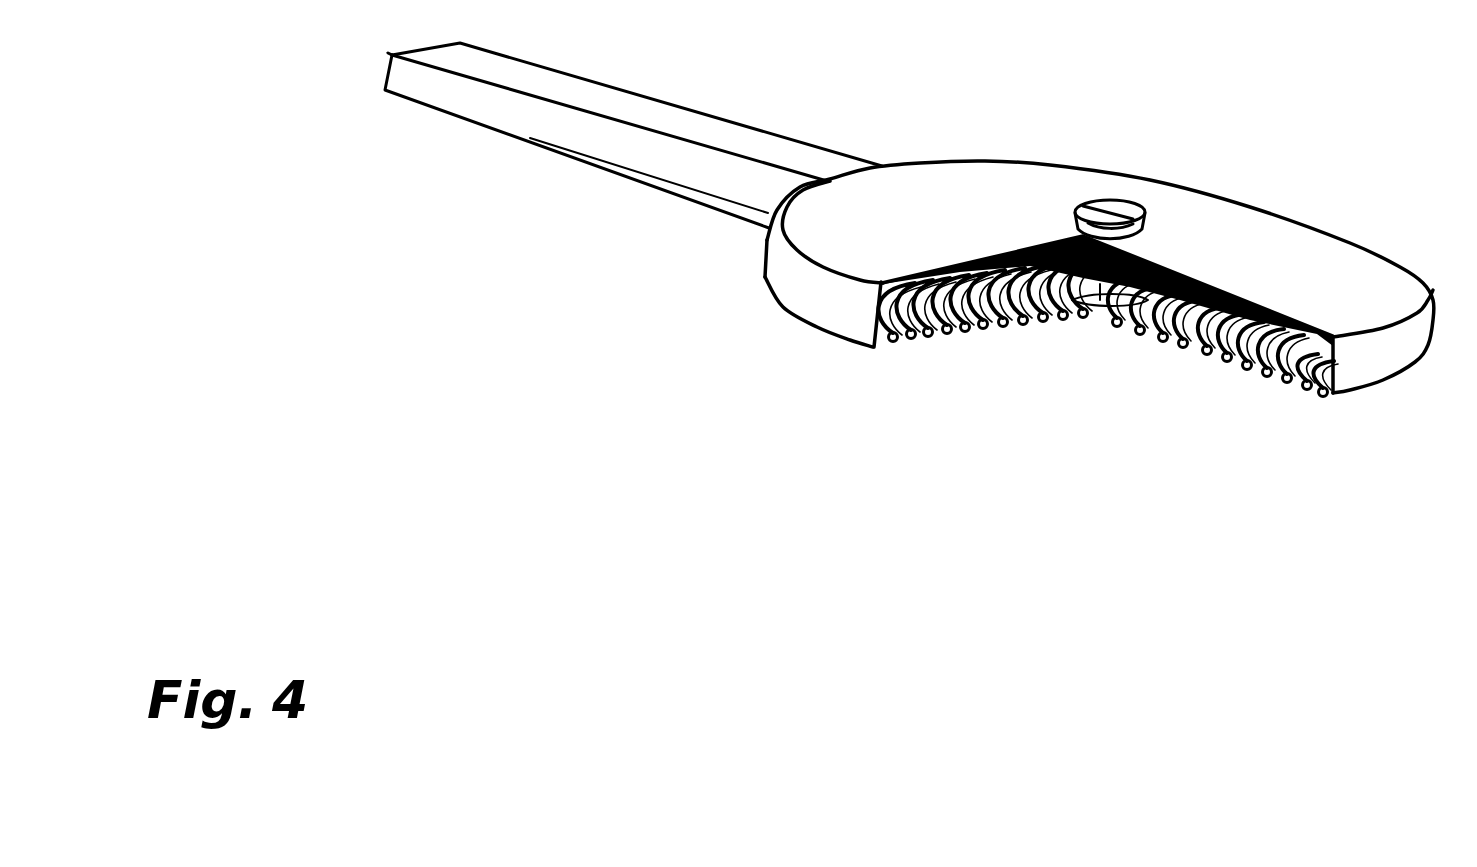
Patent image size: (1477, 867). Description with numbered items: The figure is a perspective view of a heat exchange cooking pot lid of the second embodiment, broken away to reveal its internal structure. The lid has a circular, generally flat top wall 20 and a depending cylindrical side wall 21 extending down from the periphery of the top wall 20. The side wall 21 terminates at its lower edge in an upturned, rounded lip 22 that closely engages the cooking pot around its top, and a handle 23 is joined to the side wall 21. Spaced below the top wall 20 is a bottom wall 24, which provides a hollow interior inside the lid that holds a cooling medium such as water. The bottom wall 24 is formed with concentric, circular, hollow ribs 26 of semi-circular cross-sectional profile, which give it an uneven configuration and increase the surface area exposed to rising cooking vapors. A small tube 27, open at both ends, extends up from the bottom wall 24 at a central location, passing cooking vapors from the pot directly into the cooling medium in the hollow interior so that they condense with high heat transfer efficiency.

The top wall 20 is at (1303, 230).
The side wall 21 is at (793, 288).
The lip 22 is at (882, 350).
The handle 23 is at (615, 103).
The bottom wall 24 is at (1198, 355).
The hollow ribs 26 is at (1280, 383).
The tube 27 is at (1097, 298).